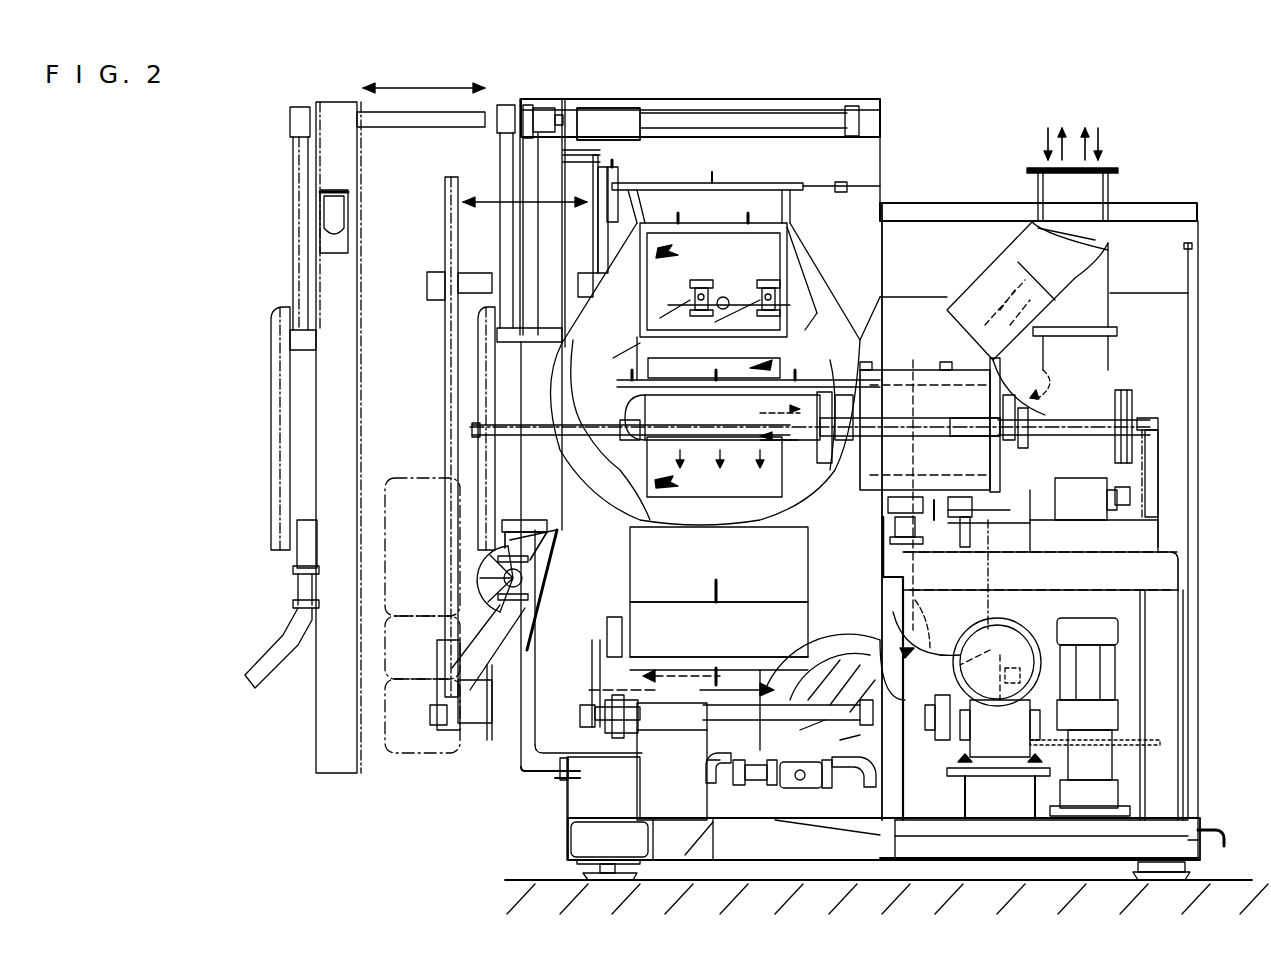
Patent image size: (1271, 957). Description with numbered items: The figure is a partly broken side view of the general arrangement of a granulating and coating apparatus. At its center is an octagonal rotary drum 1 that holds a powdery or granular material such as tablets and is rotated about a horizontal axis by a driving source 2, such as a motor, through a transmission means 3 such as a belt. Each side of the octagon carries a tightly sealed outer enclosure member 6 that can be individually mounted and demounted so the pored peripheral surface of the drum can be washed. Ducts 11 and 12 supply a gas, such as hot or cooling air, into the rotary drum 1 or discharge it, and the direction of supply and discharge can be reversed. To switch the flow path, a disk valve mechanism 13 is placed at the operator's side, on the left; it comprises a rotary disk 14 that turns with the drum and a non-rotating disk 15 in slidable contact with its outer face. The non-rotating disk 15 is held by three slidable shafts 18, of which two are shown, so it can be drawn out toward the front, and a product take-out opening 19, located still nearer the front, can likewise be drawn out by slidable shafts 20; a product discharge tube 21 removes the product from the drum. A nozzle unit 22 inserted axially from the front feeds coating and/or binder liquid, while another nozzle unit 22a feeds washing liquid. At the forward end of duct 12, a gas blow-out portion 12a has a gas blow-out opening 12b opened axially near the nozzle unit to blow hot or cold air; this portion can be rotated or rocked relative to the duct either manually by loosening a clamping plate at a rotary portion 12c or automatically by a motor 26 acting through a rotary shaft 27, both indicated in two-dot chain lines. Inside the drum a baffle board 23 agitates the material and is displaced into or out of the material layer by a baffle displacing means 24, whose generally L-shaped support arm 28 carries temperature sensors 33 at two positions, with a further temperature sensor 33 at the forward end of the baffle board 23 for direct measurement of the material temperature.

The rotary drum 1 is at (860, 273).
The driving source 2 is at (1010, 742).
The transmission means 3 is at (940, 565).
The outer enclosure member 6 is at (653, 638).
The duct 11 is at (975, 280).
The duct 12 is at (1192, 246).
The gas blow-out portion 12a is at (700, 410).
The gas blow-out opening 12b is at (748, 450).
The rotary portion 12c is at (835, 490).
The disk valve mechanism 13 is at (650, 62).
The rotary disk 14 is at (618, 170).
The non-rotating disk 15 is at (445, 245).
The slidable shaft 18 is at (470, 282).
The product take-out opening 19 is at (277, 318).
The slidable shaft 20 is at (415, 128).
The product discharge tube 21 is at (270, 665).
The nozzle unit 22 is at (505, 432).
The nozzle unit 22a is at (650, 382).
The baffle board 23 is at (698, 280).
The baffle displacing means 24 is at (770, 280).
The motor 26 is at (1100, 520).
The rotary shaft 27 is at (1132, 402).
The support arm 28 is at (802, 300).
The temperature sensor 33 is at (643, 340).